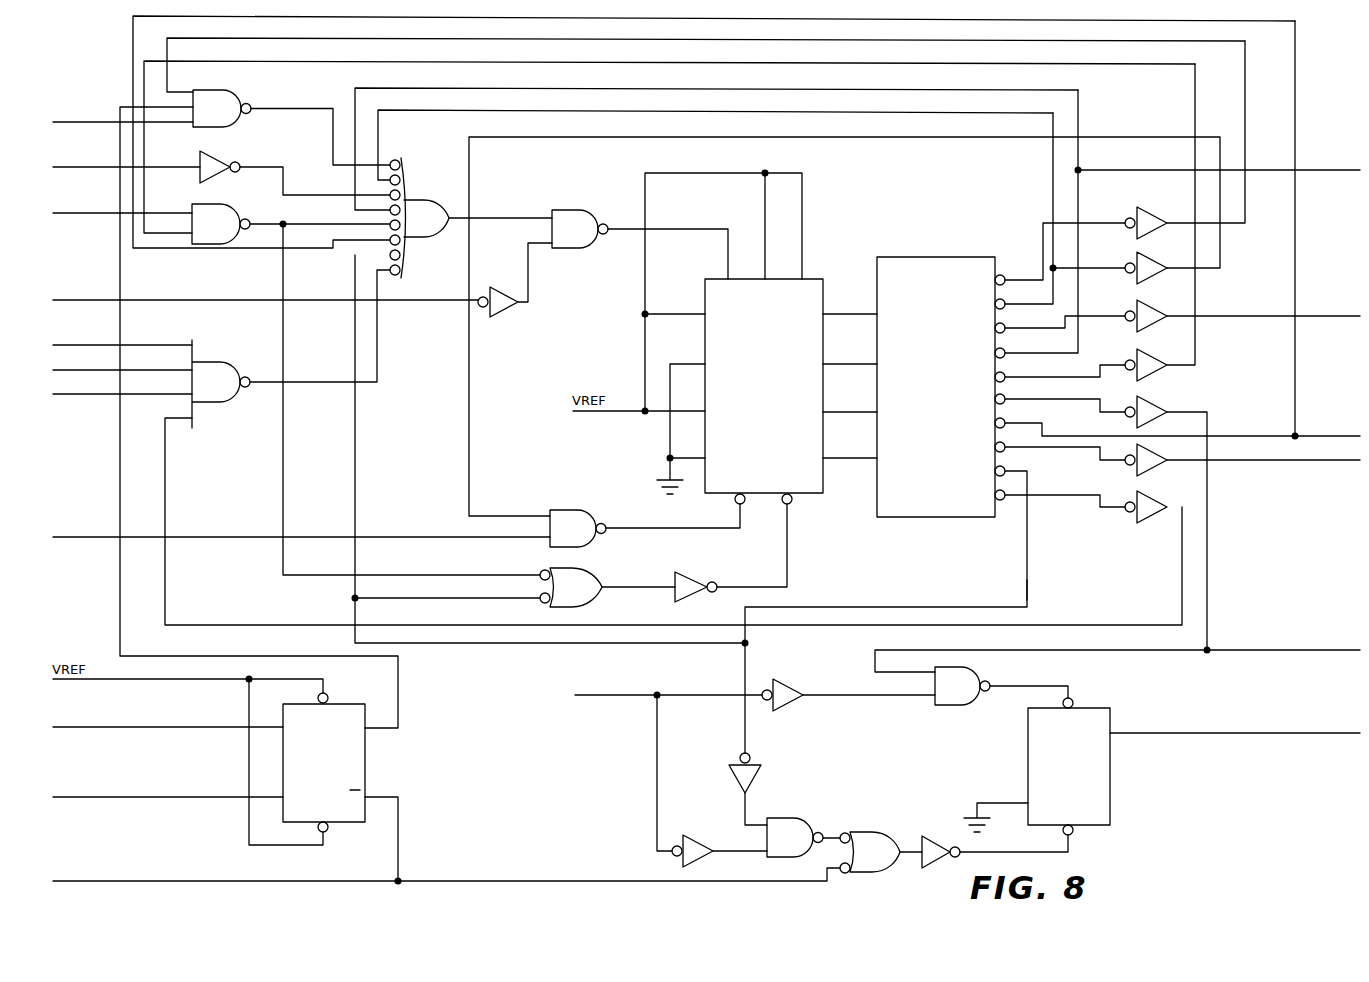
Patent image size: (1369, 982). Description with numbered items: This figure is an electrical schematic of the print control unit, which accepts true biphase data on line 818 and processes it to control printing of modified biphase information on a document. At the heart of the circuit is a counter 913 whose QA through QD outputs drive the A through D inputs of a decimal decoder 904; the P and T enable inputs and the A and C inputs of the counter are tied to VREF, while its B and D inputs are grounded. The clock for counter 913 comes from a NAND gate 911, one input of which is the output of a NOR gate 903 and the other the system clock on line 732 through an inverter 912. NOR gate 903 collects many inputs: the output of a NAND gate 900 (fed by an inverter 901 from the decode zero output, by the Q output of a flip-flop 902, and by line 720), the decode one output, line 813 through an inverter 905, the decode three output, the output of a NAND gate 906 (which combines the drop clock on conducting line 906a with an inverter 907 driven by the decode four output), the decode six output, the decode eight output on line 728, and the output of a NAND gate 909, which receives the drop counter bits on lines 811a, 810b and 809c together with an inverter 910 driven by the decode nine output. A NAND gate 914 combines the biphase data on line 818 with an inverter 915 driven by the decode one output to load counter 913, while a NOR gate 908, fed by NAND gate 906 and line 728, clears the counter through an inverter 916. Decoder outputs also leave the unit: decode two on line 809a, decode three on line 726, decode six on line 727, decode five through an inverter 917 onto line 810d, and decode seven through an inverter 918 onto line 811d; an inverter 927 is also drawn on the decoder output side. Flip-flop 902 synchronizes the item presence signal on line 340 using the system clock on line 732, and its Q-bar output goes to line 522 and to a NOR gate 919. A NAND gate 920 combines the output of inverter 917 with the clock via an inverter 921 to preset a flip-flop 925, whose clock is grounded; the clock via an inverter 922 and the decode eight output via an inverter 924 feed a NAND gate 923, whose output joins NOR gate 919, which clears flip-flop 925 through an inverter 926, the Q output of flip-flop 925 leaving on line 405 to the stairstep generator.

The NAND gate 900 is at (228, 108).
The inverter 905 is at (214, 170).
The NAND gate 906 is at (218, 215).
The conducting line 906a is at (82, 200).
The NOR gate 903 is at (427, 204).
The NAND gate 909 is at (222, 374).
The NAND gate 911 is at (577, 212).
The inverter 912 is at (505, 304).
The counter 913 is at (775, 392).
The decimal decoder 904 is at (950, 392).
The NAND gate 914 is at (576, 510).
The NOR gate 908 is at (579, 586).
The inverter 916 is at (680, 581).
The inverter 901 is at (1152, 218).
The inverter 915 is at (1154, 269).
The inverter 927 is at (1153, 317).
The inverter 907 is at (1150, 365).
The inverter 917 is at (1153, 408).
The inverter 918 is at (1146, 464).
The inverter 910 is at (1148, 514).
The line 728 is at (1034, 572).
The flip-flop 902 is at (342, 767).
The flip-flop 925 is at (1087, 771).
The NAND gate 920 is at (954, 698).
The inverter 921 is at (788, 688).
The inverter 922 is at (701, 836).
The NAND gate 923 is at (796, 824).
The inverter 924 is at (750, 778).
The NOR gate 919 is at (872, 838).
The inverter 926 is at (932, 838).
The line 720 is at (74, 117).
The line 813 is at (74, 167).
The line 732 is at (72, 297).
The line 810b is at (73, 359).
The line 811a is at (146, 347).
The line 809c is at (83, 396).
The line 818 is at (72, 528).
The line 340 is at (103, 707).
The line 522 is at (112, 878).
The line 726 is at (1325, 160).
The line 809a is at (1330, 303).
The line 727 is at (1322, 427).
The line 811d is at (1335, 462).
The line 810d is at (1322, 643).
The line 405 is at (1315, 724).